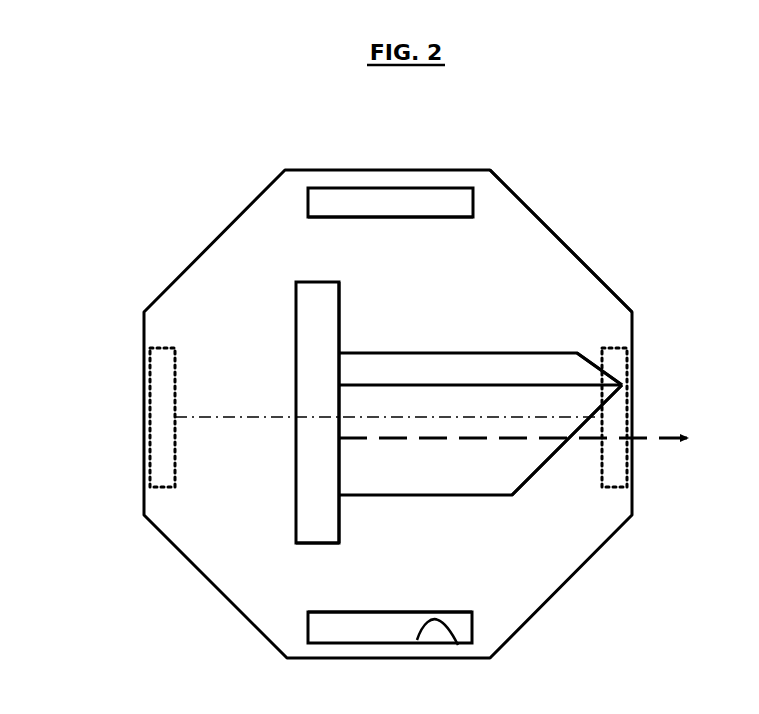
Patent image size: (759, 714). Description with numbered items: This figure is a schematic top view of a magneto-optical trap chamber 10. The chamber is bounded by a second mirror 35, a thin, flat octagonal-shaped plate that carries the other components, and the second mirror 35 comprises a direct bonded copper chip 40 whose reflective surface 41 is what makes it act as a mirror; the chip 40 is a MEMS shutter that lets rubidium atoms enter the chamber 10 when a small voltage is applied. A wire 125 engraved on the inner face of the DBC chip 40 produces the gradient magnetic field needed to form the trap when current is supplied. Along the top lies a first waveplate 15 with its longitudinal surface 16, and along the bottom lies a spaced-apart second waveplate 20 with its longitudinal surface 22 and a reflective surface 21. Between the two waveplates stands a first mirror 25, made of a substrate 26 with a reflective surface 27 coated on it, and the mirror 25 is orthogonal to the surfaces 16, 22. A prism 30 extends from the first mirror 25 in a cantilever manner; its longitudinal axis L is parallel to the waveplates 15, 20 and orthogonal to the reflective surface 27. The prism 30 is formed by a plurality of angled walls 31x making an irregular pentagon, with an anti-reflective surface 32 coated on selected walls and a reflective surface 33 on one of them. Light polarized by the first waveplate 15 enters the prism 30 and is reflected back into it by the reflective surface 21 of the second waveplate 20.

The magneto-optical trap chamber 10 is at (360, 414).
The first waveplate 15 is at (345, 198).
The longitudinal surface 16 is at (348, 217).
The second waveplate 20 is at (327, 632).
The reflective surface 21 is at (458, 645).
The longitudinal surface 22 is at (383, 612).
The first mirror 25 is at (303, 520).
The substrate 26 is at (296, 312).
The reflective surface 27 is at (339, 312).
The prism 30 is at (515, 505).
The angled walls 31x is at (527, 363).
The anti-reflective surface 32 is at (480, 369).
The reflective surface 33 is at (480, 440).
The second mirror 35 is at (522, 227).
The direct bonded copper chip 40 is at (222, 231).
The reflective surface 41 is at (482, 297).
The wire 125 is at (160, 360).
The longitudinal axis L is at (530, 440).